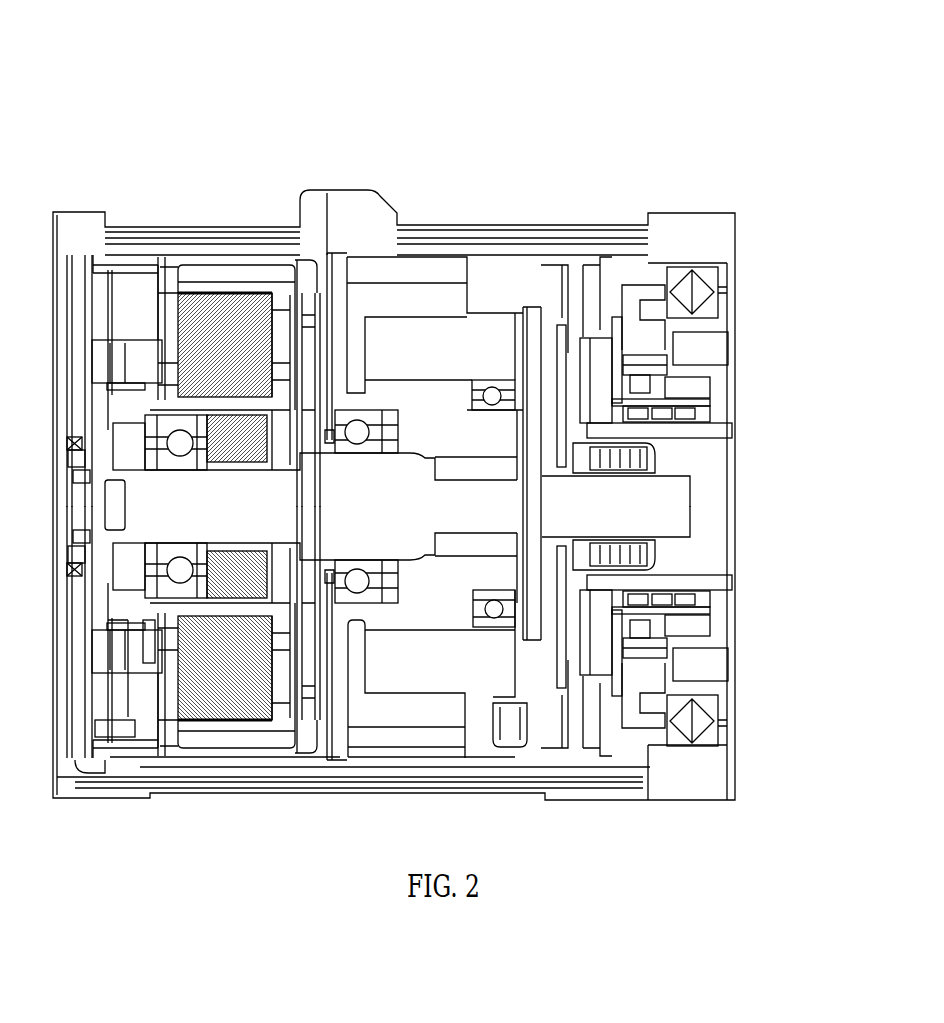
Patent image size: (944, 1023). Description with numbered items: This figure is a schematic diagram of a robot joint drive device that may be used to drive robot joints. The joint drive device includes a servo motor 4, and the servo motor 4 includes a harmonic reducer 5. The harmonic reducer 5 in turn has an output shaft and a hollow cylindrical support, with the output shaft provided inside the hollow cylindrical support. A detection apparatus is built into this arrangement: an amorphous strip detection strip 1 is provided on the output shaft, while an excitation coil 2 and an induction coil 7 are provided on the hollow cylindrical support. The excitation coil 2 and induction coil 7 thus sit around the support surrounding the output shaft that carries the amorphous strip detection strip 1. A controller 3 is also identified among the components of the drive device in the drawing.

The amorphous strip detection strip 1 is at (681, 430).
The excitation coil 2 is at (676, 401).
The controller 3 is at (676, 379).
The servo motor 4 is at (244, 320).
The harmonic reducer 5 is at (447, 408).
The induction coil 7 is at (704, 410).